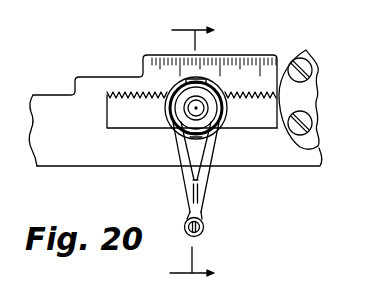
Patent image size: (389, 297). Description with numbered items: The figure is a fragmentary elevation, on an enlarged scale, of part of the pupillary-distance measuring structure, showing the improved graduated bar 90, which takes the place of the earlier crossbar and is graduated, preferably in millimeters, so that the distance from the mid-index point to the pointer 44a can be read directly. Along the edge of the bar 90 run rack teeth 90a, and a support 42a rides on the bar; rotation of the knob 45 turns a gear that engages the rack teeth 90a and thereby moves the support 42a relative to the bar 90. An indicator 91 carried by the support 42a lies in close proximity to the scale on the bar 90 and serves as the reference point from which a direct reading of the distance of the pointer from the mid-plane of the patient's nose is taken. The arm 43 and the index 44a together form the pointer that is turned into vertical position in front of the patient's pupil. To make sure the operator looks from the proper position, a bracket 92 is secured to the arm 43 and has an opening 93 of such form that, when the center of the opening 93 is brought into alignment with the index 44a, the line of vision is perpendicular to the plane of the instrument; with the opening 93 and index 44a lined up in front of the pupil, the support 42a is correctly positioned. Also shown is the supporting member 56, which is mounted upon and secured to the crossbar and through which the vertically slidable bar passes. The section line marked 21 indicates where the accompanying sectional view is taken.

The section line 21- 21 is at (205, 153).
The support 42a is at (169, 112).
The arm 43 is at (186, 175).
The pointer 44a is at (201, 223).
The knob 45 is at (172, 134).
The supporting member 56 is at (308, 97).
The graduated bar 90 is at (245, 62).
The rack teeth 90a is at (112, 104).
The indicator 91 is at (186, 80).
The bracket 92 is at (197, 208).
The opening 93 is at (188, 234).